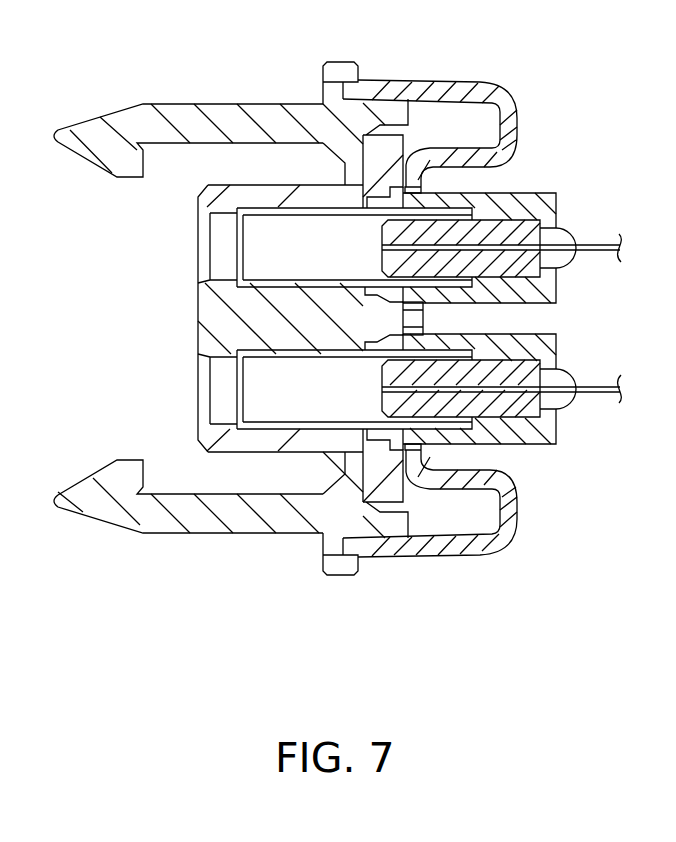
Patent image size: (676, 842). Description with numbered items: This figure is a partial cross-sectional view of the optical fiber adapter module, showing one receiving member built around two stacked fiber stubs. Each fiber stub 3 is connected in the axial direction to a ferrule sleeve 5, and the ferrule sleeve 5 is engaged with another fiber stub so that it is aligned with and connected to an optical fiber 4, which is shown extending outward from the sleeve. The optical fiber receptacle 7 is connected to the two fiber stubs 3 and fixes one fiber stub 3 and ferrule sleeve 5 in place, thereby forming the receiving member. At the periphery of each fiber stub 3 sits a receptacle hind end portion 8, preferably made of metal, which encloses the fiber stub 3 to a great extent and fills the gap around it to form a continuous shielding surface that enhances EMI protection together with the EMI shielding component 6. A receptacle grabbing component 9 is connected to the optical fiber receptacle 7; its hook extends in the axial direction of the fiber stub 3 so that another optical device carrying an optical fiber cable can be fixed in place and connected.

The fiber stub 3 is at (503, 268).
The optical fiber 4 is at (604, 392).
The ferrule sleeve 5 is at (243, 246).
The EMI shielding component 6 is at (458, 85).
The optical fiber receptacle 7 is at (233, 318).
The receptacle hind end portion 8 is at (540, 205).
The receptacle grabbing component 9 is at (187, 122).